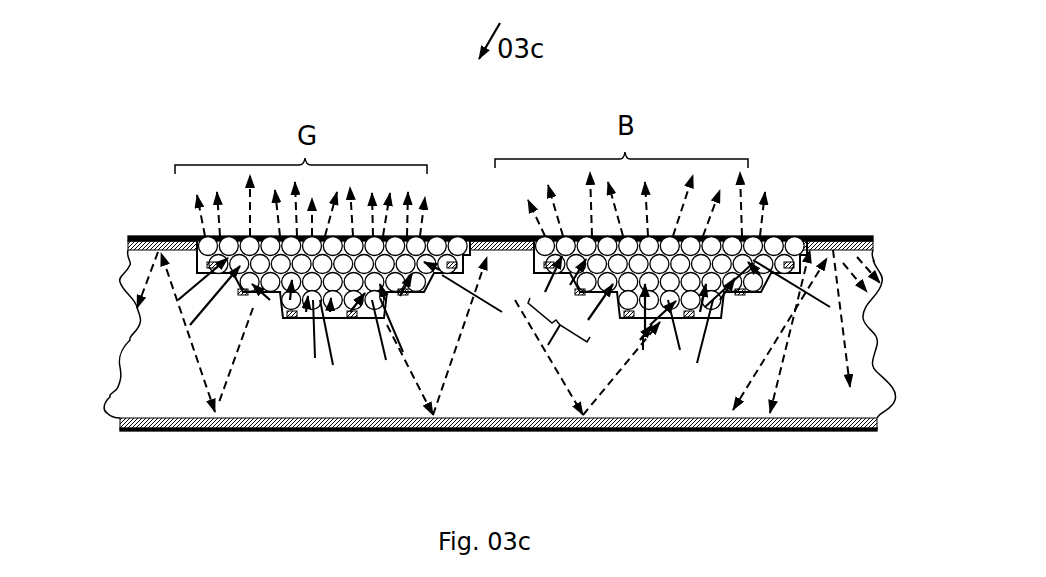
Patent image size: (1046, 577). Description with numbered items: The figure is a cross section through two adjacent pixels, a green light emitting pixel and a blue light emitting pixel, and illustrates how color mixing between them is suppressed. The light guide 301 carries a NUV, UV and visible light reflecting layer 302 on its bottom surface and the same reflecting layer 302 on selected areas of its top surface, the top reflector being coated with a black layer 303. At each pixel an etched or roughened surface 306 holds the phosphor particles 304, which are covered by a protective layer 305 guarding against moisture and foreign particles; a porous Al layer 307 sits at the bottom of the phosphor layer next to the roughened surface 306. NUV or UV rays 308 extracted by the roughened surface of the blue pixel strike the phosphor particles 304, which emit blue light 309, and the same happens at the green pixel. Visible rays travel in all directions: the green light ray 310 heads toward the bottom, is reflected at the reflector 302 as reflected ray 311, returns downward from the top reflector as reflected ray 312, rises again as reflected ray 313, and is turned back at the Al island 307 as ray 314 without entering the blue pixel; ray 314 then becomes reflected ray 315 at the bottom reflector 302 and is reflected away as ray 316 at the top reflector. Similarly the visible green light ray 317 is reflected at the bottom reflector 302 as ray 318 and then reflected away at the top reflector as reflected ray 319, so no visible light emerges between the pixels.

The light guide 301 is at (140, 372).
The NUV, UV and visible light reflecting layer 302 is at (873, 250).
The black layer 303 is at (827, 247).
The phosphor particles 304 is at (780, 246).
The protective layer 305 is at (795, 240).
The etched or roughened surface 306 is at (333, 365).
The porous Al layer 307 is at (680, 350).
The NUV or UV rays 308 is at (567, 340).
The blue light 309 is at (543, 150).
The green light ray 310 is at (413, 378).
The reflected ray 311 is at (452, 385).
The reflected ray 312 is at (524, 273).
The reflected ray 313 is at (622, 382).
The ray 314 is at (697, 363).
The reflected ray 315 is at (772, 368).
The ray 316 is at (852, 302).
The visible green light ray 317 is at (228, 388).
The ray 318 is at (185, 360).
The reflected ray 319 is at (140, 277).